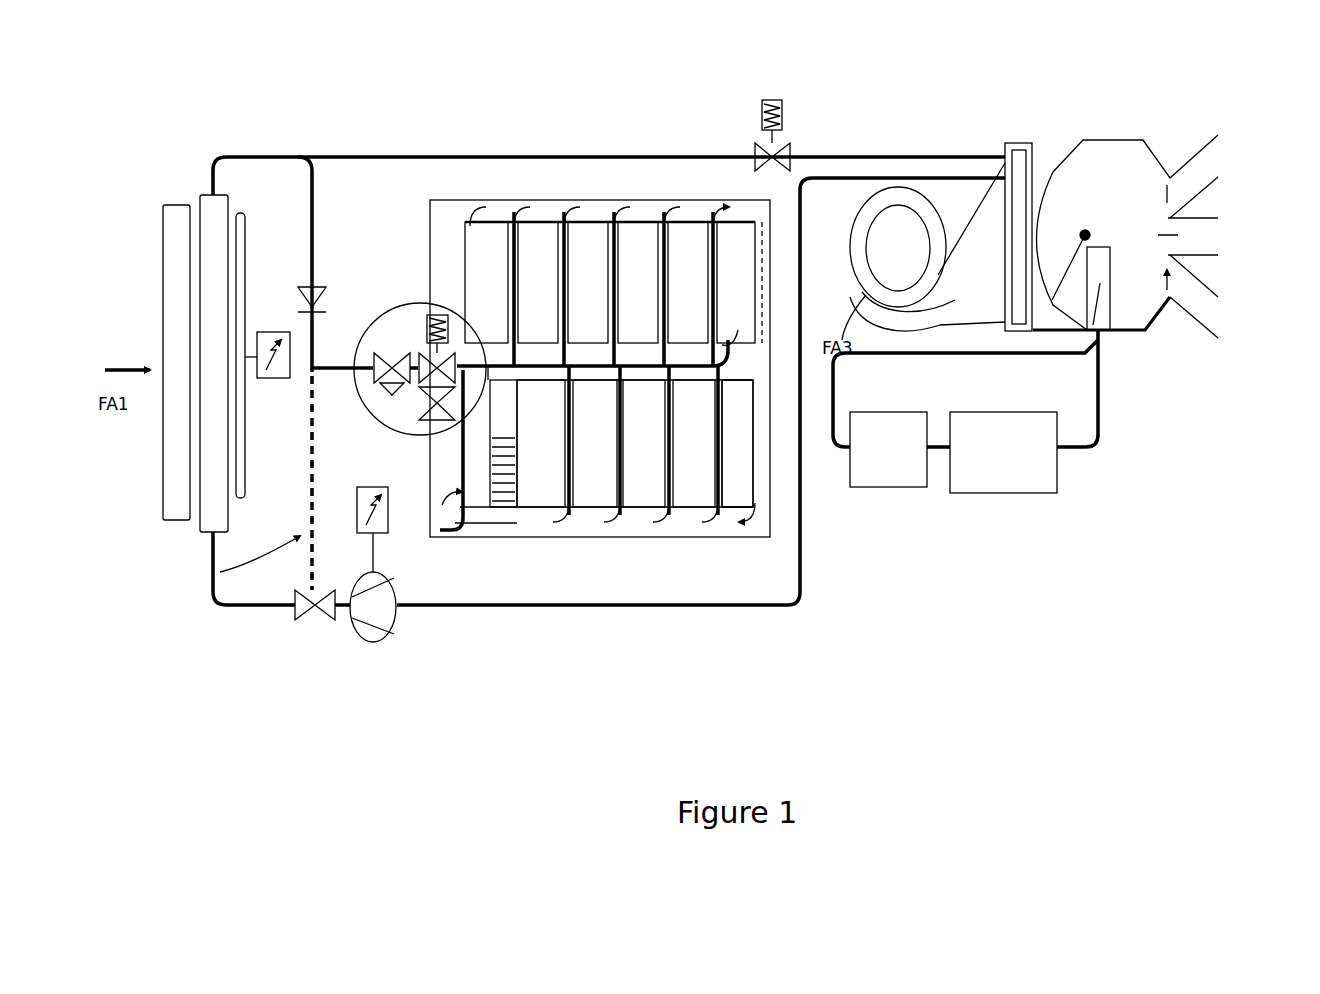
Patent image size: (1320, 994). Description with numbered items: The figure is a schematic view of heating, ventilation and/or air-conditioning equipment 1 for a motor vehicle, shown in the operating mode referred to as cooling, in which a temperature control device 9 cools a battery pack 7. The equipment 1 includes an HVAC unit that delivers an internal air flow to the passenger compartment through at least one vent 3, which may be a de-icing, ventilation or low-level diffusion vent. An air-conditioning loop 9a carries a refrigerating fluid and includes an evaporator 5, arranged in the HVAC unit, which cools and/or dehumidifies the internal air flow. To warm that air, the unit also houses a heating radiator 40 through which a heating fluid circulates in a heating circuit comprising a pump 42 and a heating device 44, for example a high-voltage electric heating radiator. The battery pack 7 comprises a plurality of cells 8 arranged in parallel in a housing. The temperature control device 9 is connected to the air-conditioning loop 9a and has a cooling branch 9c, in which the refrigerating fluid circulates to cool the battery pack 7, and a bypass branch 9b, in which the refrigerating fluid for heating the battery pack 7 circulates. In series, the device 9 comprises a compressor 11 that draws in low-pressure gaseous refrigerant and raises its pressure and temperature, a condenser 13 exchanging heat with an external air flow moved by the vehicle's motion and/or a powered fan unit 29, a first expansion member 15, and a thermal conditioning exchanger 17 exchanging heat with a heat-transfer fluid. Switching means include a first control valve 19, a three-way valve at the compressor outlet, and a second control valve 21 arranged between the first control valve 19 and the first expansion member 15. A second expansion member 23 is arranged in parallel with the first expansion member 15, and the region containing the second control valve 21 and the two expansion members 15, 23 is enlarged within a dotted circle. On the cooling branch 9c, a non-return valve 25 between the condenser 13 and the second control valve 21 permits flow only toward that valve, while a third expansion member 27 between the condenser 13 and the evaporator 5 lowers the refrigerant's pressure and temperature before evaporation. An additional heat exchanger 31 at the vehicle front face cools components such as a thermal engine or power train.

The heating, ventilation and/or air-conditioning equipment 1 is at (917, 98).
The vent 3 is at (1213, 162).
The evaporator 5 is at (1004, 262).
The battery pack 7 is at (557, 196).
The cell 8 is at (724, 524).
The temperature control device 9 is at (326, 136).
The air-conditioning loop 9a is at (387, 153).
The bypass branch 9b is at (212, 574).
The cooling branch 9c is at (320, 203).
The compressor 11 is at (373, 645).
The condenser 13 is at (208, 194).
The first expansion member 15 is at (424, 318).
The thermal conditioning exchanger 17 is at (456, 540).
The first control valve 19 is at (306, 630).
The second control valve 21 is at (376, 346).
The second expansion member 23 is at (386, 422).
The non-return valve 25 is at (320, 282).
The third expansion member 27 is at (772, 98).
The powered fan unit 29 is at (246, 480).
The additional heat exchanger 31 is at (175, 222).
The heating radiator 40 is at (1116, 340).
The pump 42 is at (888, 449).
The heating device 44 is at (1003, 452).